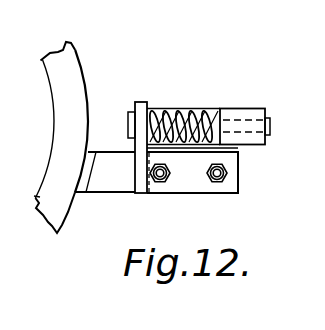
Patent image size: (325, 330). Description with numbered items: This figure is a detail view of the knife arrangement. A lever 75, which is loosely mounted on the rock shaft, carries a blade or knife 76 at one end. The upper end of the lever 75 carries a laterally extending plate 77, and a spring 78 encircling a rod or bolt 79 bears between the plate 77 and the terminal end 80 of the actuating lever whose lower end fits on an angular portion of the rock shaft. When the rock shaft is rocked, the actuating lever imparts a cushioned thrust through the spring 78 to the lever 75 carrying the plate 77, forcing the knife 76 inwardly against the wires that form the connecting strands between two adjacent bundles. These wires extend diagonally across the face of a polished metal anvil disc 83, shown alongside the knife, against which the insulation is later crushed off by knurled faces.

The lever 75 is at (203, 194).
The blade or knife 76 is at (125, 193).
The laterally extending plate 77 is at (143, 102).
The spring 78 is at (174, 112).
The rod or bolt 79 is at (128, 123).
The terminal end 80 is at (230, 113).
The anvil disc 83 is at (59, 214).